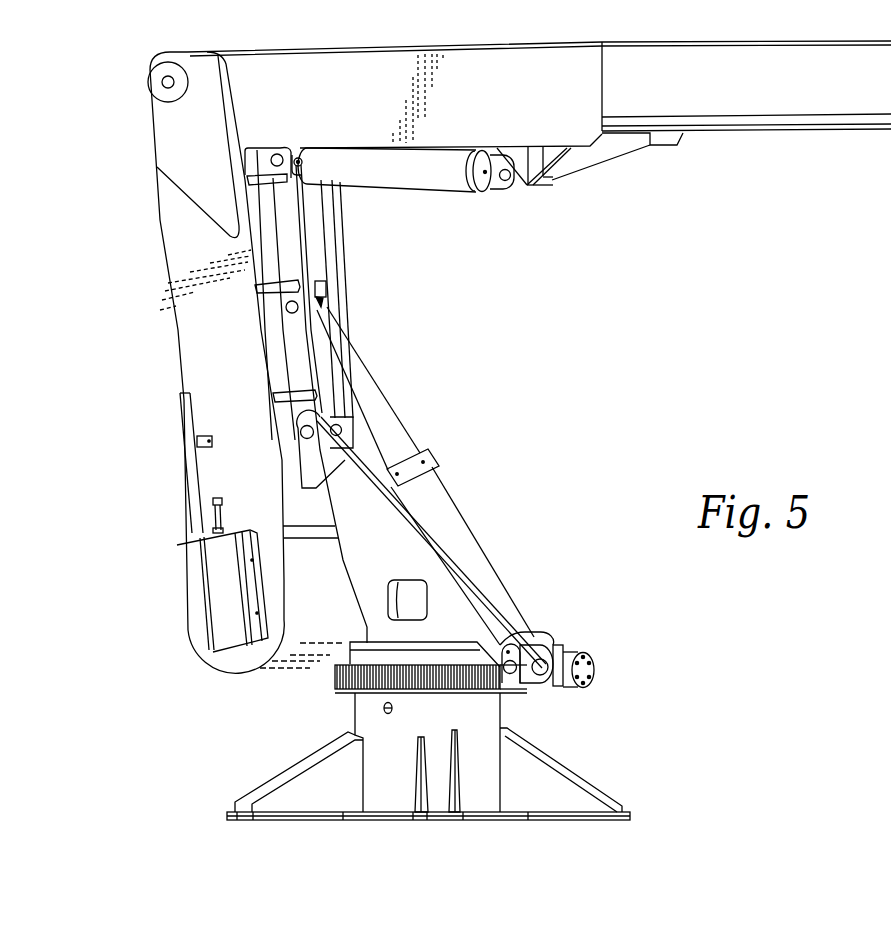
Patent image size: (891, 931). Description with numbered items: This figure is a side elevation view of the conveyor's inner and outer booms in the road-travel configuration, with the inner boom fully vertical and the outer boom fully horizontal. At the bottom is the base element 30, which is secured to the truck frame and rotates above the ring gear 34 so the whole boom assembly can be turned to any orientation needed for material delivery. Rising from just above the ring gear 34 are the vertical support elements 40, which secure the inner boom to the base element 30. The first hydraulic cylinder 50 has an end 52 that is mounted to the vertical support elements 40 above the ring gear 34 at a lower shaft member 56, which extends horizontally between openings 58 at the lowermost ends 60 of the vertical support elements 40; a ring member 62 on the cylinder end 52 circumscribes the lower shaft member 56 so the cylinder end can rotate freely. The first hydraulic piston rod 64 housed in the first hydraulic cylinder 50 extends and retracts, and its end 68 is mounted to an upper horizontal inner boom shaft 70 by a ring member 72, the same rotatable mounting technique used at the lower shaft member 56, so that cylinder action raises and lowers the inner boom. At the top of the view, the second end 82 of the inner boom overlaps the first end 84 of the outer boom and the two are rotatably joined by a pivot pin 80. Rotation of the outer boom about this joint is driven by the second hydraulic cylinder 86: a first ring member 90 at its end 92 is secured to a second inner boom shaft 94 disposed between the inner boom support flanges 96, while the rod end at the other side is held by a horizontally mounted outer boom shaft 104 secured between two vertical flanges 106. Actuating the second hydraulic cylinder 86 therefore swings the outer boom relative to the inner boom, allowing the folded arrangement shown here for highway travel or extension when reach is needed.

The base element 30 is at (478, 780).
The ring gear 34 is at (333, 678).
The vertical support elements 40 is at (415, 560).
The first hydraulic cylinder 50 is at (480, 572).
The first hydraulic cylinder end 52 is at (540, 662).
The lower shaft member 56 is at (511, 672).
The openings 58 is at (510, 667).
The lowermost ends 60 is at (500, 638).
The ring member 62 is at (573, 666).
The first hydraulic piston rod 64 is at (393, 432).
The end of the first hydraulic piston rod 68 is at (323, 313).
The upper horizontal inner boom shaft 70 is at (295, 302).
The ring member 72 is at (325, 291).
The pivot pin 80 is at (167, 82).
The second end of the inner boom 82 is at (163, 143).
The first end of the outer boom 84 is at (265, 65).
The second hydraulic cylinder 86 is at (440, 184).
The first ring member 90 is at (300, 158).
The end of the second hydraulic cylinder 92 is at (298, 162).
The second inner boom shaft 94 is at (277, 155).
The inner boom support flanges 96 is at (292, 242).
The outer boom shaft 104 is at (505, 181).
The vertical flanges 106 is at (511, 183).